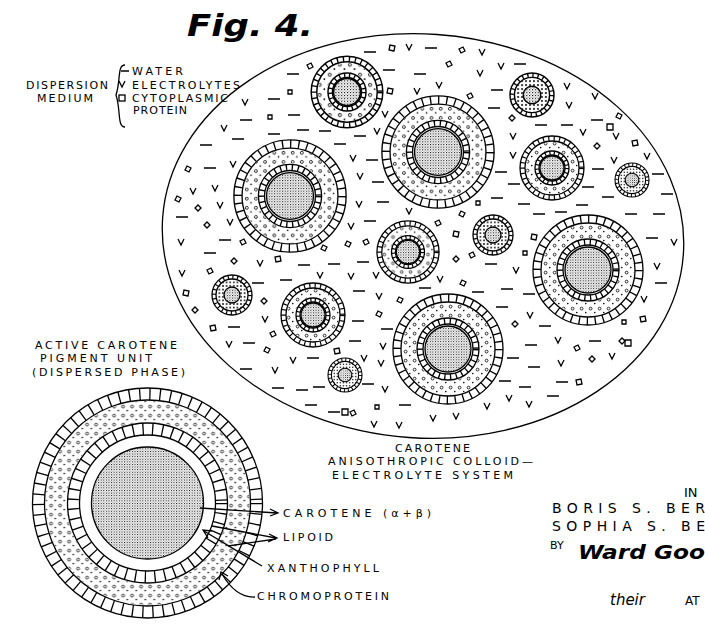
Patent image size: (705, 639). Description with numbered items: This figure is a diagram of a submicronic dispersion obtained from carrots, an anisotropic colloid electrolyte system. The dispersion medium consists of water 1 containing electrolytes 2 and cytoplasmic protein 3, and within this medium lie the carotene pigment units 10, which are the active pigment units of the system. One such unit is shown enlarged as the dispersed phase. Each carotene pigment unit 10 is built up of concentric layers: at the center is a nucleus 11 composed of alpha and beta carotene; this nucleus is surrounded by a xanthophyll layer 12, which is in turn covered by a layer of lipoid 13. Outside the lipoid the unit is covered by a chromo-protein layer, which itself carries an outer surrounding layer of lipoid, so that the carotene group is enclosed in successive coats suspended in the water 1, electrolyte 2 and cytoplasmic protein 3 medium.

The water 1 is at (191, 305).
The electrolytes 2 is at (416, 41).
The cytoplasmic protein 3 is at (611, 126).
The carotene pigment units 10 is at (465, 100).
The central nucleus 11 is at (178, 486).
The xanthophyll layer 12 is at (174, 503).
The layer of lipoid 13 is at (172, 503).